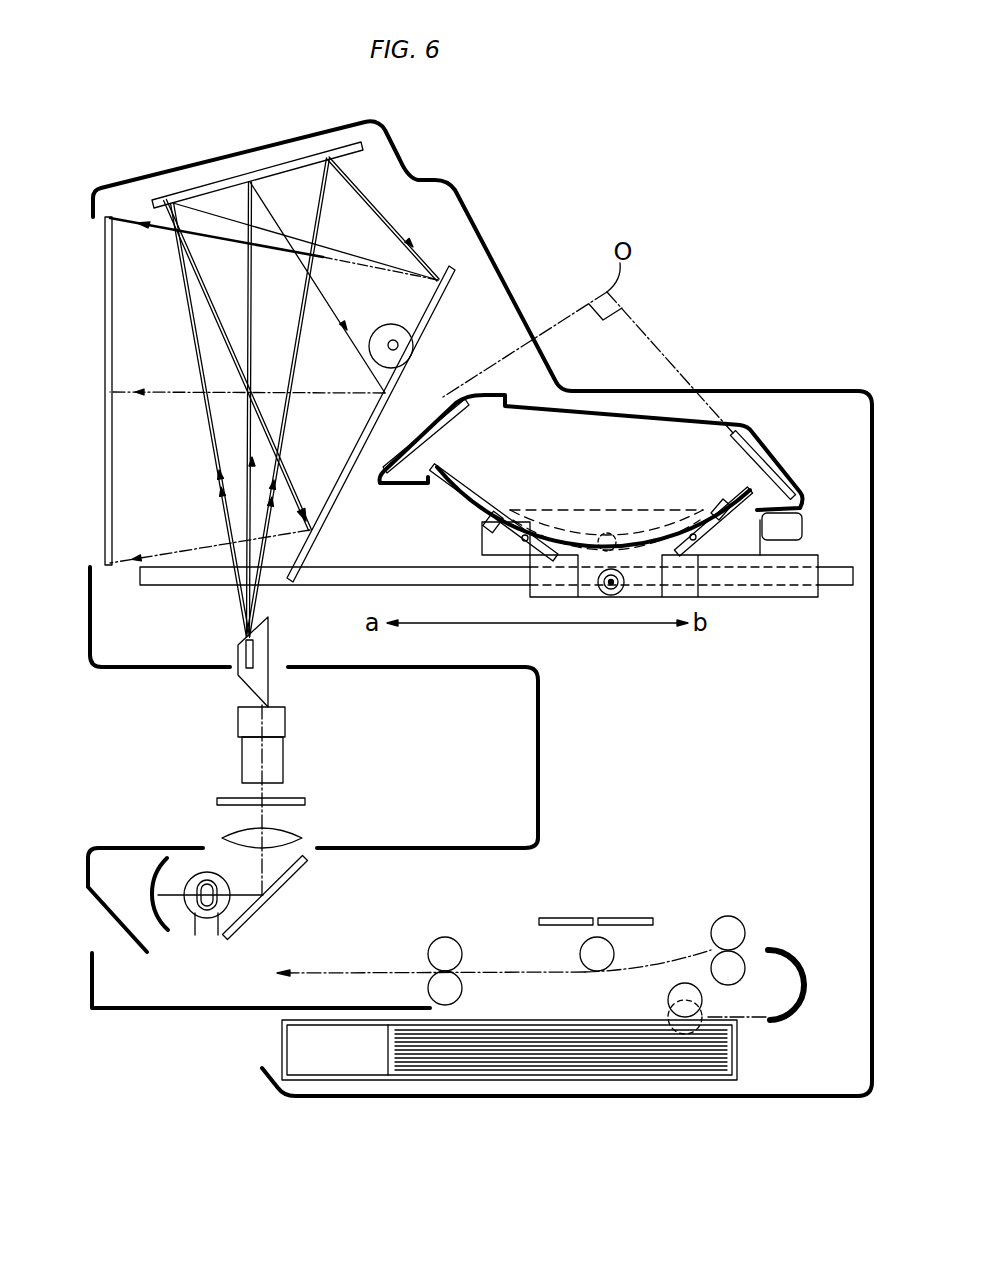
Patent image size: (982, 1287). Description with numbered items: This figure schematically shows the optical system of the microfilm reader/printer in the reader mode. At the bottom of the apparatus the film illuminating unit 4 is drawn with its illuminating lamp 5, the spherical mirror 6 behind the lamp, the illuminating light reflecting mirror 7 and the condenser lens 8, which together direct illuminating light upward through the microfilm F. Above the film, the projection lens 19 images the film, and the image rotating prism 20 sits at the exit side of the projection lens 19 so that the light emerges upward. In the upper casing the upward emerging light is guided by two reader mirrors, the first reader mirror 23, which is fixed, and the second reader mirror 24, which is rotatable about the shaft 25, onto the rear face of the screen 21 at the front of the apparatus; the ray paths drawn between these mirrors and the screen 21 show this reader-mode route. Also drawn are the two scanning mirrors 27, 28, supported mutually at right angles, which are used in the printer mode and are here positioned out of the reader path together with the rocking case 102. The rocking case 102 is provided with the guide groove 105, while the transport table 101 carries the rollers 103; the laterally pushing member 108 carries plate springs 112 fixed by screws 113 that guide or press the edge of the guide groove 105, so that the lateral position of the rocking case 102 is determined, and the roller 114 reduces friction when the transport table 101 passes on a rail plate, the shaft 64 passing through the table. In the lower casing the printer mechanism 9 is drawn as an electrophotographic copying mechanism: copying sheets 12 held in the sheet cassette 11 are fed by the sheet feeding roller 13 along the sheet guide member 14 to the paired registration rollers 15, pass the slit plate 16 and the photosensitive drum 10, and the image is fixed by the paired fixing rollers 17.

The film illuminating unit 4 is at (215, 854).
The illuminating lamp 5 is at (208, 913).
The spherical mirror 6 is at (168, 933).
The illuminating light reflecting mirror 7 is at (250, 920).
The condenser lens 8 is at (280, 837).
The printer mechanism 9 is at (682, 938).
The photosensitive drum 10 is at (580, 954).
The sheet cassette 11 is at (562, 1078).
The copying sheets 12 is at (478, 1062).
The sheet feeding roller 13 is at (690, 1033).
The sheet guide member 14 is at (802, 998).
The paired registration rollers 15 is at (738, 932).
The slit plate 16 is at (622, 922).
The paired fixing rollers 17 is at (440, 948).
The projection lens 19 is at (277, 720).
The image rotating prism 20 is at (260, 677).
The screen 21 is at (103, 305).
The first reader mirror 23 is at (210, 185).
The second reader mirror 24 is at (370, 420).
The shaft 25 is at (393, 345).
The scanning mirror 27 is at (440, 433).
The scanning mirror 28 is at (745, 457).
The shaft 64 is at (372, 565).
The transport table 101 is at (732, 577).
The rocking case 102 is at (578, 432).
The rollers 103 is at (607, 532).
The guide groove 105 is at (485, 503).
The laterally pushing member 108 is at (667, 518).
The plate springs 112 is at (505, 528).
The screws 113 is at (525, 540).
The roller 114 is at (615, 597).
The microfilm F is at (290, 798).